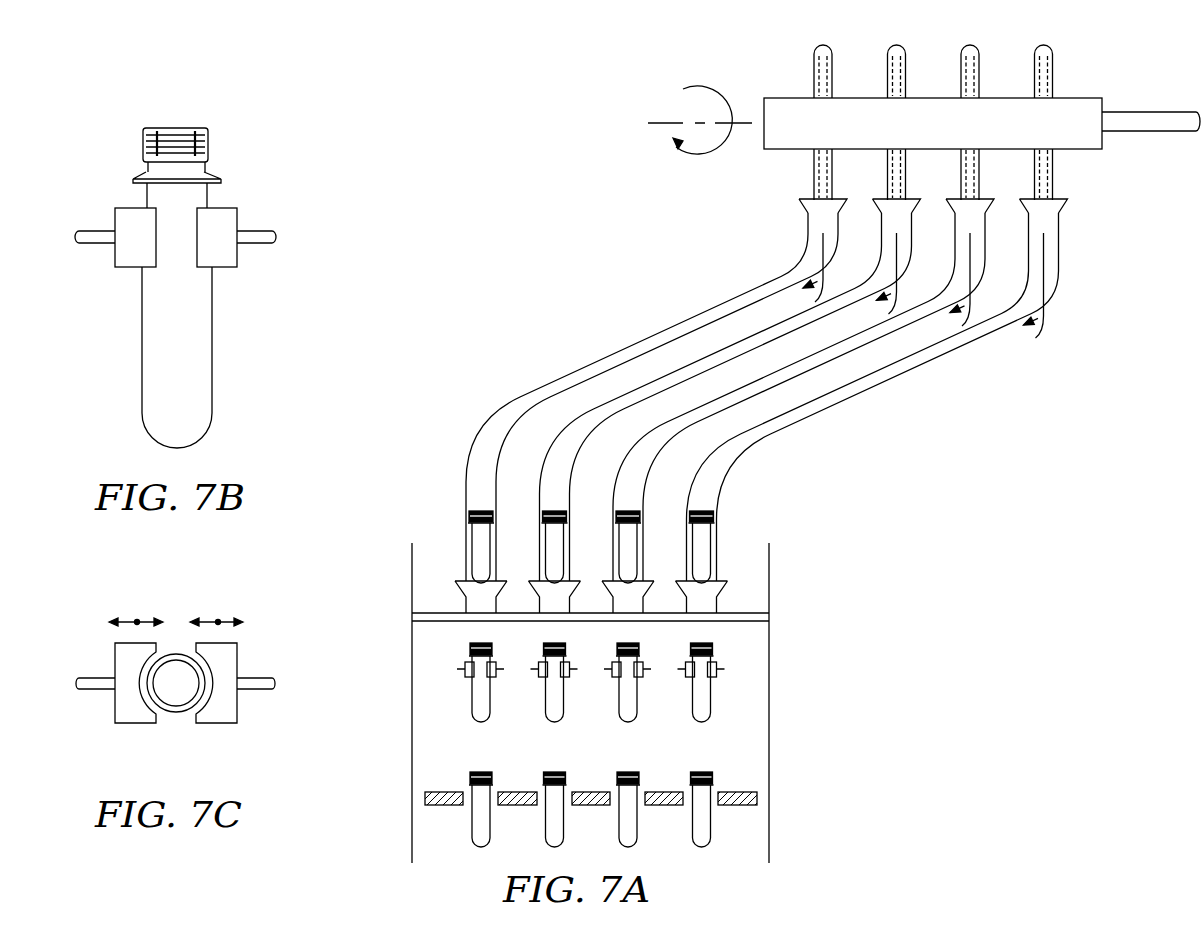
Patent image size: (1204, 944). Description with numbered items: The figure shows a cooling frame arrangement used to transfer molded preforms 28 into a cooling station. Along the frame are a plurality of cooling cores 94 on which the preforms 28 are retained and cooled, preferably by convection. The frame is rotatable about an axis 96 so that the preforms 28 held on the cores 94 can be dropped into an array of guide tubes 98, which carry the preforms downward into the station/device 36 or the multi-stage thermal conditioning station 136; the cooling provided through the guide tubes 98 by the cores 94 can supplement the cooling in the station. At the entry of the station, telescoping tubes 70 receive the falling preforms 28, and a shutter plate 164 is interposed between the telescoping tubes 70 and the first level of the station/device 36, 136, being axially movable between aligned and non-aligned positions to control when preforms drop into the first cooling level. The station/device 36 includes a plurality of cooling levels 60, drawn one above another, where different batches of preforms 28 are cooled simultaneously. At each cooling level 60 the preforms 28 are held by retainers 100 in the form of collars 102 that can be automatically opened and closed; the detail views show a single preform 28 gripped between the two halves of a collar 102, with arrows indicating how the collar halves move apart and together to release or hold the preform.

In FIG. 7A, the preform 28 is at (557, 508).
In FIG. 7C, the preform 28 is at (175, 707).
In FIG. 7A, the station/device 36 is at (656, 691).
In FIG. 7A, the multi-stage thermal conditioning station 136 is at (770, 552).
In FIG. 7A, the cooling level 60 is at (417, 678).
In FIG. 7A, the telescoping tube 70 is at (457, 593).
In FIG. 7A, the cooling core 94 is at (1052, 70).
In FIG. 7A, the axis 96 is at (663, 123).
In FIG. 7A, the guide tube 98 is at (983, 343).
In FIG. 7A, the retainer 100 is at (716, 661).
In FIG. 7B, the retainer 100 is at (150, 288).
In FIG. 7B, the collar 102 is at (224, 215).
In FIG. 7C, the collar 102 is at (227, 662).
In FIG. 7A, the shutter plate 164 is at (753, 611).